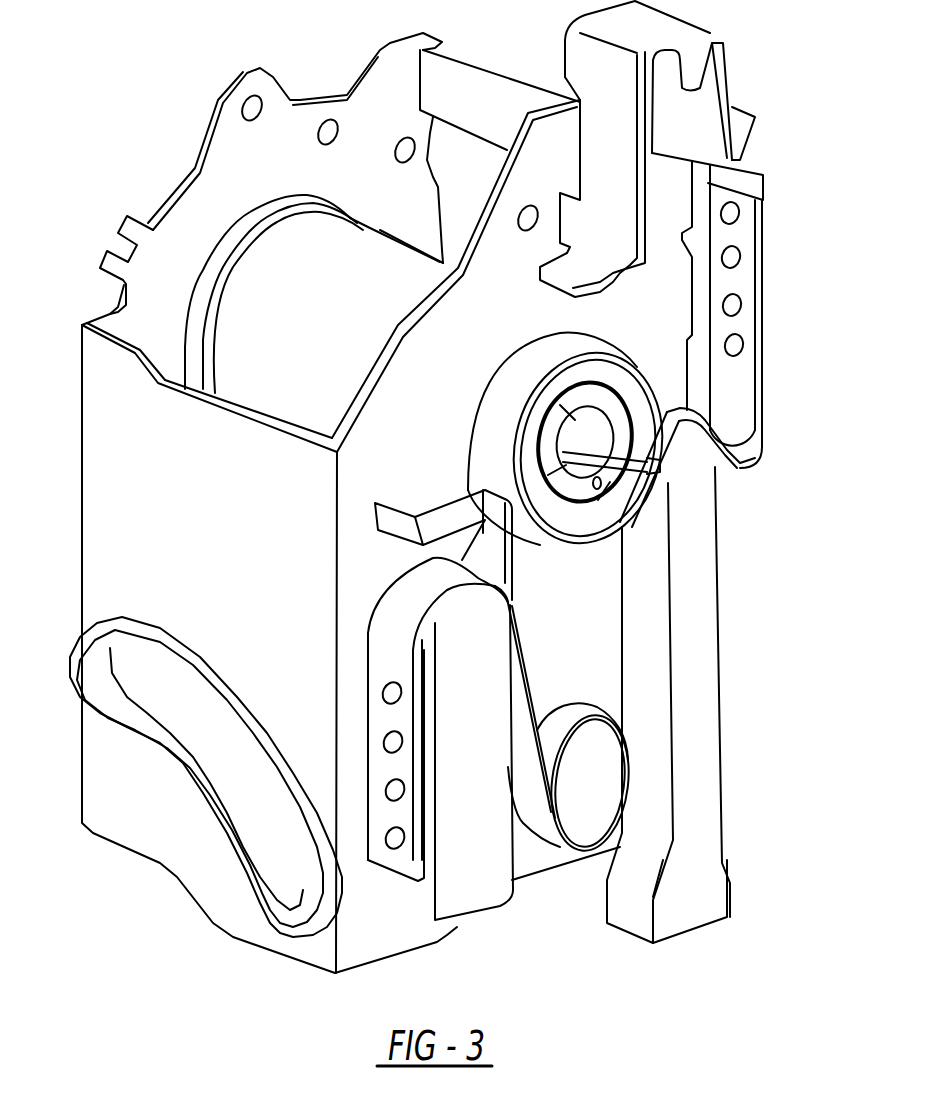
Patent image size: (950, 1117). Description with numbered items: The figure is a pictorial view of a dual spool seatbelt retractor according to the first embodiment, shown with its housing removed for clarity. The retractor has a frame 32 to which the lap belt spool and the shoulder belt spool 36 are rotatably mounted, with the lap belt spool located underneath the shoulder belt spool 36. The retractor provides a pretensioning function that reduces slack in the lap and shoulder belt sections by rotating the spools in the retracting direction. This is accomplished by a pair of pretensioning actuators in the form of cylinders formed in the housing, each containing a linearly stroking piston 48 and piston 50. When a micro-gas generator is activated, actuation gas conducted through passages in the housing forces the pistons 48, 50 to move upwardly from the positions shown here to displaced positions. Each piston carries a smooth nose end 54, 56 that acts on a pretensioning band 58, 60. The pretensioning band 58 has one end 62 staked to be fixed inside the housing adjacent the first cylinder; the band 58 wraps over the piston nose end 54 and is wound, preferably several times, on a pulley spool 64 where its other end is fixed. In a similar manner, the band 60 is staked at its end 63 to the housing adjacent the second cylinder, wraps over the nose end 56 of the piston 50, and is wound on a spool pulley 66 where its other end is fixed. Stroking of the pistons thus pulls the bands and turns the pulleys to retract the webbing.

The frame 32 is at (107, 503).
The shoulder belt spool 36 is at (270, 267).
The piston 48 is at (483, 840).
The piston 50 is at (707, 755).
The nose end 54 is at (458, 620).
The nose end 56 is at (700, 445).
The pretensioning band 58 is at (407, 600).
The pretensioning band 60 is at (740, 372).
The end 62 is at (400, 877).
The end 63 is at (755, 235).
The pulley spool 64 is at (582, 803).
The spool pulley 66 is at (600, 497).